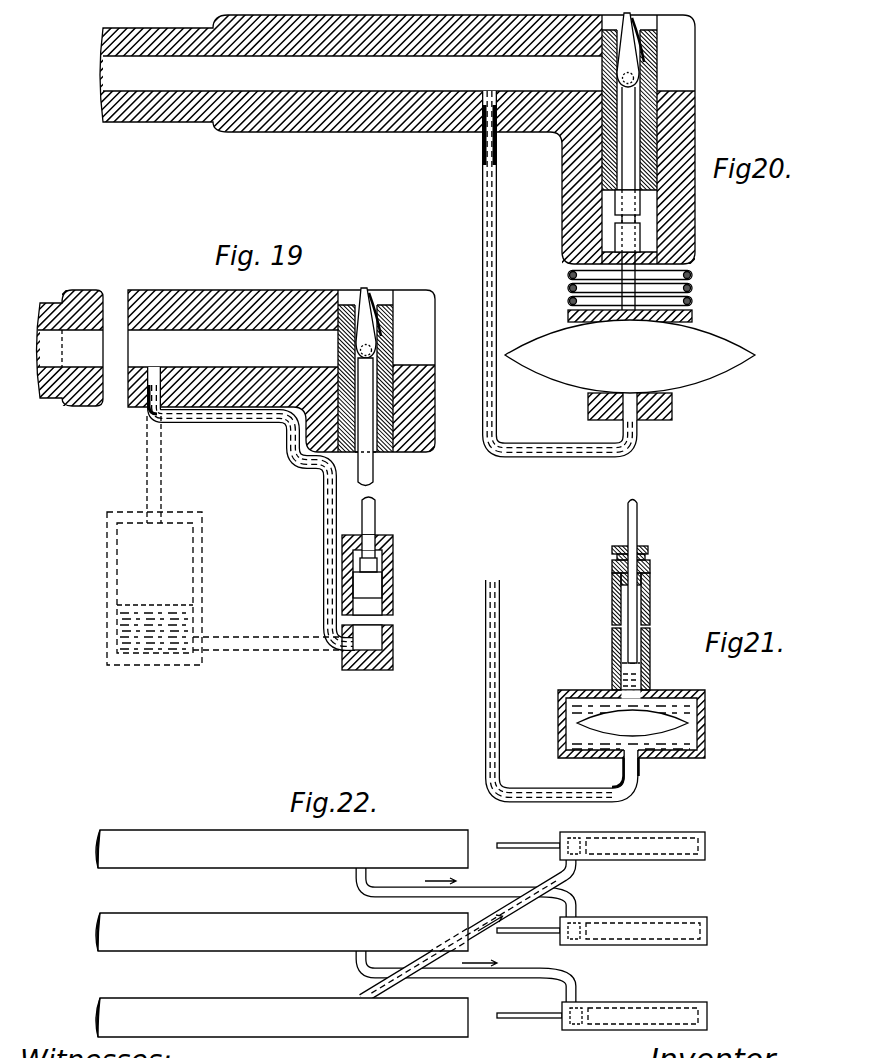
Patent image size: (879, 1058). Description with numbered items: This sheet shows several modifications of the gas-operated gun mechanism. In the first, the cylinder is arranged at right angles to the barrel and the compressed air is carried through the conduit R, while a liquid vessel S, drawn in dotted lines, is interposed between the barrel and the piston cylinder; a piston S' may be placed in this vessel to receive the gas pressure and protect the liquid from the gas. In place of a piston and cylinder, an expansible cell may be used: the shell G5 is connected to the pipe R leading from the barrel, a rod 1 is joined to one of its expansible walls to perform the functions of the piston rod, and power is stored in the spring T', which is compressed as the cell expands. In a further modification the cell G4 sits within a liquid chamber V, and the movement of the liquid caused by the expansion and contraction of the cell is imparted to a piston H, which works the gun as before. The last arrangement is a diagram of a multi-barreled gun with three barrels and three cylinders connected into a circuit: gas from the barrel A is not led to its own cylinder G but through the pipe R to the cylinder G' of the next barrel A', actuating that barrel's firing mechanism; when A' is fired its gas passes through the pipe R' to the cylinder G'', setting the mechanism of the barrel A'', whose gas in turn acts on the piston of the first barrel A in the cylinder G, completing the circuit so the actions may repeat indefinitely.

In FIG. 19, the barrel A is at (281, 371).
In FIG. 22, the barrel A is at (282, 849).
In FIG. 22, the next barrel A' is at (282, 932).
In FIG. 22, the third barrel A'' is at (282, 1017).
In FIG. 20, the pipe R is at (536, 270).
In FIG. 19, the pipe R is at (252, 505).
In FIG. 21, the pipe R is at (566, 687).
In FIG. 22, the pipe R is at (466, 888).
In FIG. 22, the pipe R' is at (466, 931).
In FIG. 19, the liquid vessel S is at (140, 588).
In FIG. 19, the piston S' is at (124, 627).
In FIG. 19, the piston H is at (394, 585).
In FIG. 21, the piston H is at (653, 662).
In FIG. 19, the cylinder G is at (383, 647).
In FIG. 22, the cylinder G is at (601, 860).
In FIG. 22, the cylinder G' is at (602, 943).
In FIG. 22, the cylinder G'' is at (602, 1028).
In FIG. 21, the cell G4 is at (632, 719).
In FIG. 20, the expansible cell G5 is at (630, 356).
In FIG. 20, the spring T' is at (648, 288).
In FIG. 20, the rod 1 is at (628, 238).
In FIG. 21, the liquid chamber V is at (718, 718).